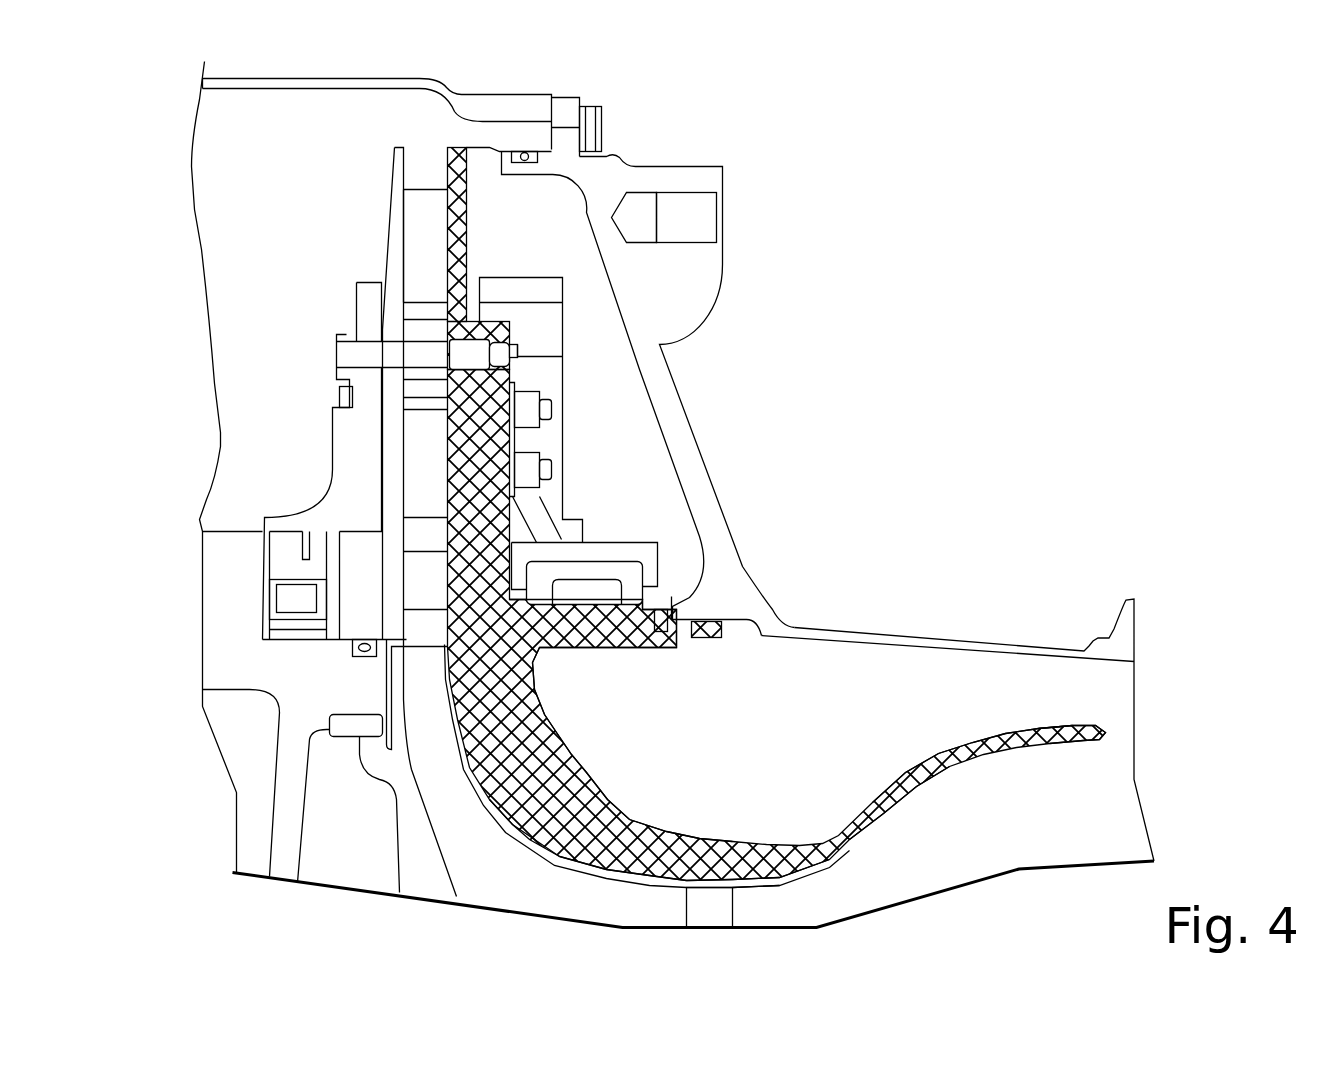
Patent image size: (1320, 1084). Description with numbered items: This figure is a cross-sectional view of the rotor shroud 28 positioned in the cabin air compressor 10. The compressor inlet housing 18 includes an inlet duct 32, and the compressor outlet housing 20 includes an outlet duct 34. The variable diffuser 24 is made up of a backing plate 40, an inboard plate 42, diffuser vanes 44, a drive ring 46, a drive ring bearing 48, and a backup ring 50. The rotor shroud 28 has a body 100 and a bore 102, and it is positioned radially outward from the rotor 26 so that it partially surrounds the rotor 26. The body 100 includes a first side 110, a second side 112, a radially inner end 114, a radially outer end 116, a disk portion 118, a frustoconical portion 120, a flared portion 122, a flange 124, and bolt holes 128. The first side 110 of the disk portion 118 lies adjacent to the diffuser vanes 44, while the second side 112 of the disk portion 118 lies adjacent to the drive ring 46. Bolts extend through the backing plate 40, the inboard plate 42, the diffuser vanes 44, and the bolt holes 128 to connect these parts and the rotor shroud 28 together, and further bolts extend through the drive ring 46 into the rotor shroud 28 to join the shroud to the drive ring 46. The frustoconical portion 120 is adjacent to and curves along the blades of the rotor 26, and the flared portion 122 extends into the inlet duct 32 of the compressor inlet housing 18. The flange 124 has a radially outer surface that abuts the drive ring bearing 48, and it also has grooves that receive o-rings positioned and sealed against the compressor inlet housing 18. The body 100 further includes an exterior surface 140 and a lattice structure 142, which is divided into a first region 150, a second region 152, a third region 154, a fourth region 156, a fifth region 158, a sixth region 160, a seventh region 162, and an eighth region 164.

The cabin air compressor 10 is at (921, 212).
The compressor inlet housing 18 is at (670, 407).
The compressor outlet housing 20 is at (298, 83).
The variable diffuser 24 is at (423, 145).
The rotor 26 is at (493, 873).
The rotor shroud 28 is at (832, 852).
The inlet duct 32 is at (1080, 793).
The outlet duct 34 is at (277, 167).
The backing plate 40 is at (367, 442).
The inboard plate 42 is at (393, 225).
The diffuser vanes 44 is at (427, 222).
The drive ring 46 is at (607, 553).
The drive ring bearing 48 is at (630, 572).
The backup ring 50 is at (678, 610).
The body 100 is at (515, 693).
The bore 102 is at (750, 886).
The first side 110 is at (425, 689).
The second side 112 is at (1122, 733).
The radially inner end 114 is at (683, 890).
The radially outer end 116 is at (470, 142).
The disk portion 118 is at (473, 442).
The frustoconical portion 120 is at (607, 800).
The flared portion 122 is at (970, 760).
The flange 124 is at (640, 615).
The bolt holes 128 is at (510, 330).
The exterior surface 140 is at (1012, 727).
The lattice structure 142 is at (560, 777).
The first region 150 is at (457, 217).
The second region 152 is at (510, 378).
The third region 154 is at (475, 563).
The fourth region 156 is at (610, 648).
The fifth region 158 is at (682, 641).
The sixth region 160 is at (503, 813).
The seventh region 162 is at (735, 842).
The eighth region 164 is at (897, 781).